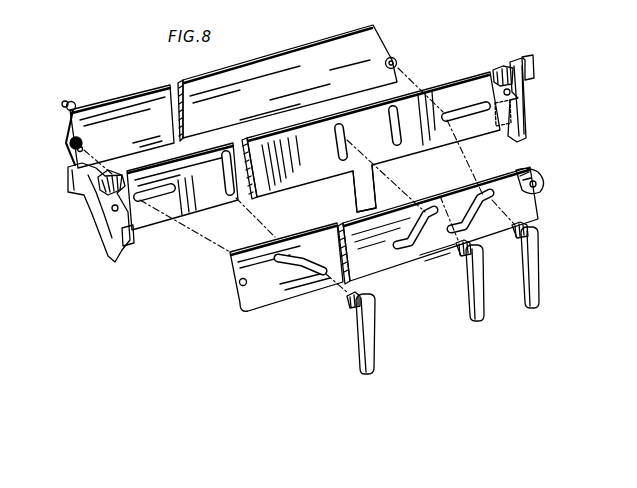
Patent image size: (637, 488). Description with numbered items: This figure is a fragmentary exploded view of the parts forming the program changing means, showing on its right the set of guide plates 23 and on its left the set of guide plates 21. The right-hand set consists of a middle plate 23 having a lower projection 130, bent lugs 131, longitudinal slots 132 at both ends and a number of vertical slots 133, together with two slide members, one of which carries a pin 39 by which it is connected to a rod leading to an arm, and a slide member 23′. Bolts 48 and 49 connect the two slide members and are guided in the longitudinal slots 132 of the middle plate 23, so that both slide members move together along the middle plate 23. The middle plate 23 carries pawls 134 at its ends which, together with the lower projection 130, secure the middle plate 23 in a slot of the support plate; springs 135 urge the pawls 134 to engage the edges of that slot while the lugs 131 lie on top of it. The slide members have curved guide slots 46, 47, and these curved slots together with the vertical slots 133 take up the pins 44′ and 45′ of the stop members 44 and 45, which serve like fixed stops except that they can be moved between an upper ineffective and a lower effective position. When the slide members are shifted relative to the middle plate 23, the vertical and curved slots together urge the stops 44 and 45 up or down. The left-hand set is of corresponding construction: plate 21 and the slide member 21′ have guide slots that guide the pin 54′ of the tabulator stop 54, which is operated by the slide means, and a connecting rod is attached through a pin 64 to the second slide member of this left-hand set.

The pin 64 is at (68, 102).
The spring 135 is at (110, 172).
The bolt 48 is at (68, 152).
The pawl 134 is at (86, 192).
The longitudinal slot 132 is at (174, 192).
The bent lug 131 is at (130, 246).
The guide plate 21 is at (182, 189).
The slide member 23' is at (287, 74).
The bolt 49 is at (395, 58).
The middle plate 23 is at (371, 130).
The vertical slot 133 is at (392, 144).
The lower projection 130 is at (366, 190).
The curved guide slot 47 is at (300, 256).
The pin 39 is at (538, 172).
The curved guide slot 46 is at (460, 210).
The slide member 21' is at (286, 278).
The pin 54' is at (336, 308).
The tabulator stop 54 is at (347, 334).
The pin 44' is at (451, 264).
The stop member 44 is at (458, 287).
The pin 45' is at (510, 245).
The stop member 45 is at (516, 279).